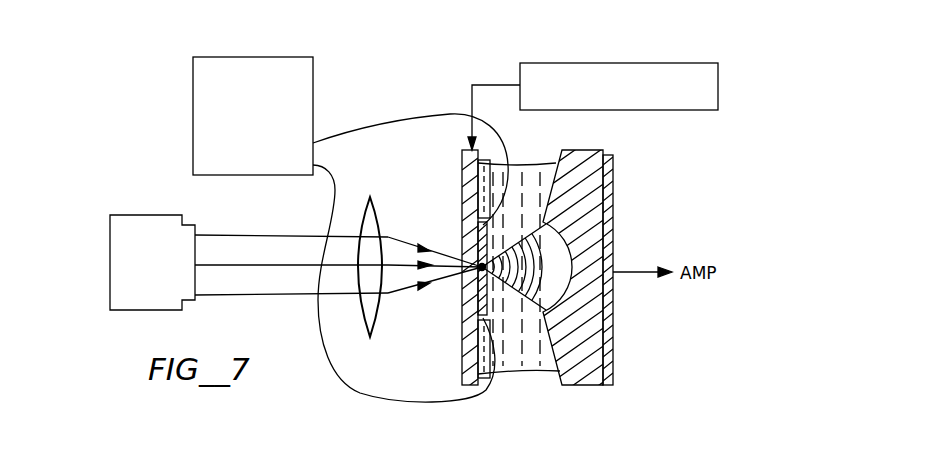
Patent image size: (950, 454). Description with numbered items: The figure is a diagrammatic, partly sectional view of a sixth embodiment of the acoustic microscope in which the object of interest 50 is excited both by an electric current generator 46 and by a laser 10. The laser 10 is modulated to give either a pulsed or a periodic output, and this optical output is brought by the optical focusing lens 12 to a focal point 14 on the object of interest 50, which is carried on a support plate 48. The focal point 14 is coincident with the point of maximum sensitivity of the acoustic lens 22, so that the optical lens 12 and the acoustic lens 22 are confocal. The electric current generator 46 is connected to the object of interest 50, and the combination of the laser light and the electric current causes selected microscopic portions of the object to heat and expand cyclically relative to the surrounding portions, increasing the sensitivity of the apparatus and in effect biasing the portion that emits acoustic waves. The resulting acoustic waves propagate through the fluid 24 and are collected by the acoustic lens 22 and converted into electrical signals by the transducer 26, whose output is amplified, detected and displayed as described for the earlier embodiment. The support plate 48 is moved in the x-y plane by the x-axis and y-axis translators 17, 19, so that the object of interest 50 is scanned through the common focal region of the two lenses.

The laser 10 is at (110, 232).
The optical focusing lens 12 is at (381, 205).
The focal point 14 is at (466, 280).
The x-axis translator 17 is at (614, 112).
The y-axis translator 19 is at (698, 110).
The acoustic lens 22 is at (578, 150).
The fluid 24 is at (545, 374).
The transducer 26 is at (613, 328).
The electric current generator 46 is at (193, 86).
The support plate 48 is at (449, 270).
The object of interest 50 is at (462, 222).